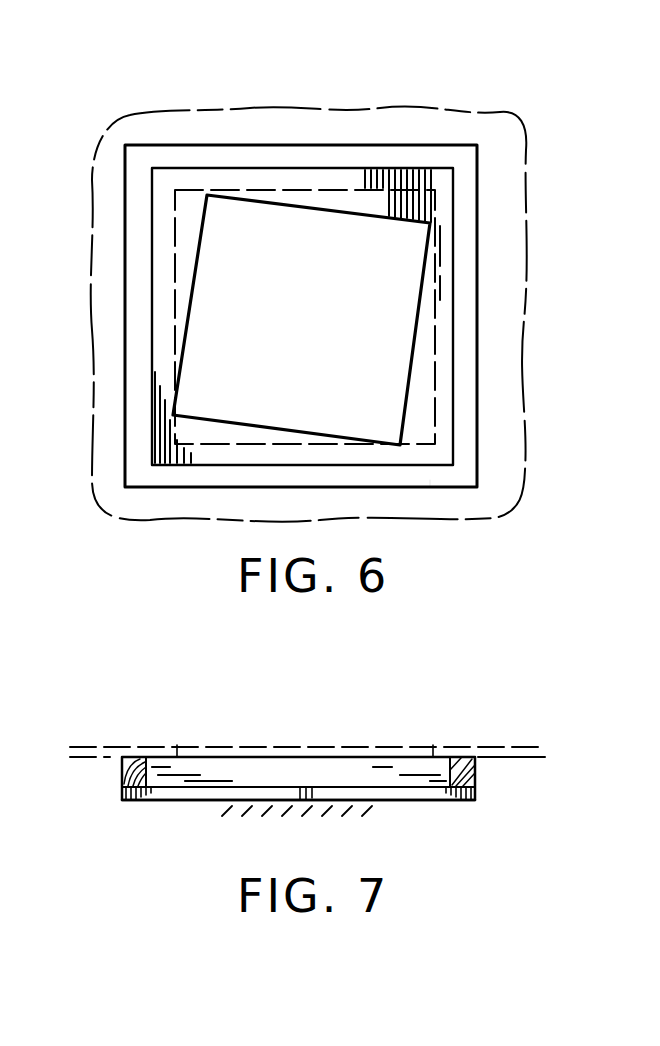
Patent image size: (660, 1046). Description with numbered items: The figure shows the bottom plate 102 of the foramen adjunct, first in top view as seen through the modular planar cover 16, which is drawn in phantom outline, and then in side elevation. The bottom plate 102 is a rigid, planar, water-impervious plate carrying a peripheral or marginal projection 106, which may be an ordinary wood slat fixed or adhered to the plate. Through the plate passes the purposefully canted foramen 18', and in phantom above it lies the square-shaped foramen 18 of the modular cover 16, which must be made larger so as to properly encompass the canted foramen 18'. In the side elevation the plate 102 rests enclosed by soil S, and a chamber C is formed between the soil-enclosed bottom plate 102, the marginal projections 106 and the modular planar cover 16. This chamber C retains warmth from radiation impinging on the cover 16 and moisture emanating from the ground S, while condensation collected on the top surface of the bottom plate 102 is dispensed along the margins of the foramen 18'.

In FIG. 6, the modular planar cover 16 is at (517, 253).
In FIG. 7, the modular planar cover 16 is at (482, 748).
In FIG. 6, the square-shaped foramen 18 is at (378, 316).
In FIG. 7, the square-shaped foramen 18 is at (299, 732).
In FIG. 6, the foramen of bottom plate 18' is at (301, 320).
In FIG. 7, the foramen of bottom plate 18' is at (298, 826).
In FIG. 6, the bottom plate 102 is at (440, 456).
In FIG. 7, the bottom plate 102 is at (405, 798).
In FIG. 6, the marginal projection 106 is at (413, 480).
In FIG. 7, the marginal projection 106 is at (135, 767).
In FIG. 7, the chamber C is at (262, 768).
In FIG. 7, the soil S is at (297, 819).